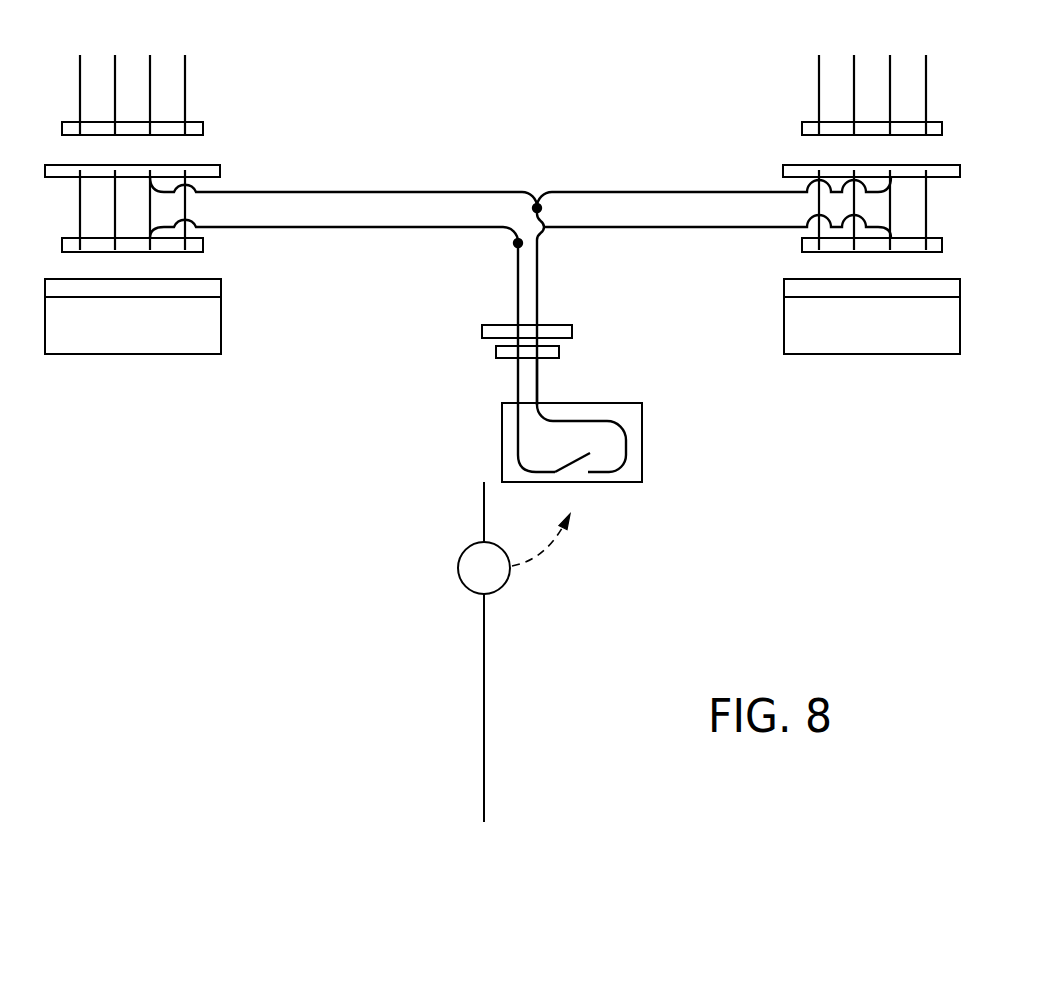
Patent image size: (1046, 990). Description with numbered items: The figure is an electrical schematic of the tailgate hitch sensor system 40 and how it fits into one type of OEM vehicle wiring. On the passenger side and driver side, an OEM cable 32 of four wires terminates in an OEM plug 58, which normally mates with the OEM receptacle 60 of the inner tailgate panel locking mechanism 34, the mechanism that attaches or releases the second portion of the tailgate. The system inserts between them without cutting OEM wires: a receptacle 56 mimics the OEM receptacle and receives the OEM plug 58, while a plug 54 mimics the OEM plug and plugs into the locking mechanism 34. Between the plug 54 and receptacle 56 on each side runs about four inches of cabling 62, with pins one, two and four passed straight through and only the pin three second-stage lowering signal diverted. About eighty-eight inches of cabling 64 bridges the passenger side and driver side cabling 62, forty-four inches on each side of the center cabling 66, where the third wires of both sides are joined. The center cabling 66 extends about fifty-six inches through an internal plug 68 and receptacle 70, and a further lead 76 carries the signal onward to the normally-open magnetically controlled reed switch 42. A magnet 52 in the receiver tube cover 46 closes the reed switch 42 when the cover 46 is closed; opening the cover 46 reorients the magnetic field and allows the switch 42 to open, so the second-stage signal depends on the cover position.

The cables 32 is at (168, 63).
The inner tailgate panel locking mechanism 34 is at (150, 342).
The tailgate hitch sensor system 40 is at (395, 122).
The reed switch 42 is at (640, 459).
The cover 46 is at (484, 727).
The magnet 52 is at (457, 568).
The plug 54 is at (203, 247).
The receptacle 56 is at (133, 170).
The OEM plug 58 is at (203, 128).
The OEM receptacle 60 is at (212, 289).
The cabling 62 is at (80, 219).
The cabling 64 is at (358, 228).
The center cabling 66 is at (517, 286).
The internal plug 68 is at (560, 352).
The internal receptacle 70 is at (555, 323).
The switch lead 76 is at (537, 393).